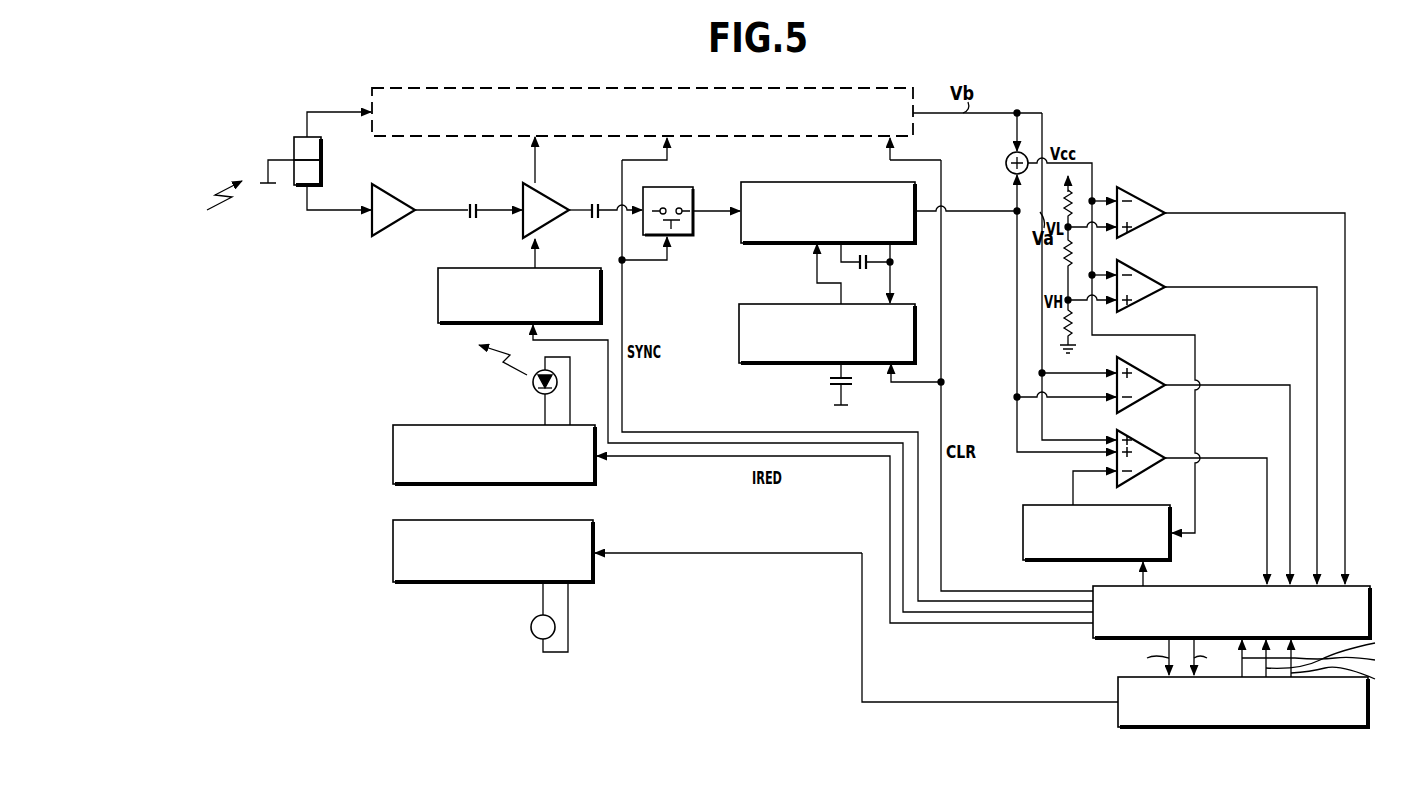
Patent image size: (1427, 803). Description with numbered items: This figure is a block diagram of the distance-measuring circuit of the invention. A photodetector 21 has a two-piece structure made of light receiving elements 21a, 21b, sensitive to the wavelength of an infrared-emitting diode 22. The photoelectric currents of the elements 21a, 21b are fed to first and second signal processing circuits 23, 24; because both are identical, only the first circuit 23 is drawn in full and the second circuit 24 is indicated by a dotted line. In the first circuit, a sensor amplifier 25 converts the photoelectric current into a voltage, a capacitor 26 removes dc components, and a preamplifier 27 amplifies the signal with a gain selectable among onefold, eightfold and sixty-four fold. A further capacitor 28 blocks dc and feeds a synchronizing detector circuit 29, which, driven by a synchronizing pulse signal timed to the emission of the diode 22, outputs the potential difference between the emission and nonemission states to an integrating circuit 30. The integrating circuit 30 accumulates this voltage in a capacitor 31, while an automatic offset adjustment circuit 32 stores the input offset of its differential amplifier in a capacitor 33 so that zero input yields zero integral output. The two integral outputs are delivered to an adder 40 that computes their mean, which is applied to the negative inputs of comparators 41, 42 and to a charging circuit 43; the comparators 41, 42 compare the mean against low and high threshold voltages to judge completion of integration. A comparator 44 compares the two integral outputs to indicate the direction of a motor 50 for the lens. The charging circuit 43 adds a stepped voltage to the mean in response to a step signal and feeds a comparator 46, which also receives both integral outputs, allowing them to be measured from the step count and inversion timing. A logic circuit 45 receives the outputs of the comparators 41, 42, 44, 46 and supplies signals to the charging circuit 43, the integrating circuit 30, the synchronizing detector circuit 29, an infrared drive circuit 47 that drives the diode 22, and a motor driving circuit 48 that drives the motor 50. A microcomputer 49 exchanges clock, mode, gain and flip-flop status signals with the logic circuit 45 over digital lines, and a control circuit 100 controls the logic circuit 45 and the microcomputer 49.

The photodetector 21 is at (290, 150).
The light receiving element 21a is at (298, 178).
The light receiving element 21b is at (300, 140).
The infrared-emitting diode 22 is at (533, 386).
The first signal processing circuit 23 is at (440, 214).
The second signal processing circuit 24 is at (473, 86).
The sensor amplifier 25 is at (385, 237).
The capacitor 26 is at (473, 220).
The preamplifier 27 is at (522, 192).
The capacitor 28 is at (595, 202).
The synchronizing detector circuit 29 is at (683, 238).
The integrating circuit 30 is at (800, 181).
The capacitor 31 is at (868, 270).
The automatic offset adjustment circuit 32 is at (775, 303).
The capacitor 33 is at (830, 381).
The adder 40 is at (1006, 163).
The comparator 41 is at (1145, 200).
The comparator 42 is at (1147, 275).
The charging circuit 43 is at (1023, 537).
The comparator 44 is at (1145, 372).
The logic circuit 45 is at (1237, 586).
The comparator 46 is at (1147, 446).
The infrared drive circuit 47 is at (393, 438).
The motor driving circuit 48 is at (393, 536).
The microcomputer 49 is at (1118, 690).
The motor 50 is at (531, 627).
The control circuit 100 is at (438, 298).